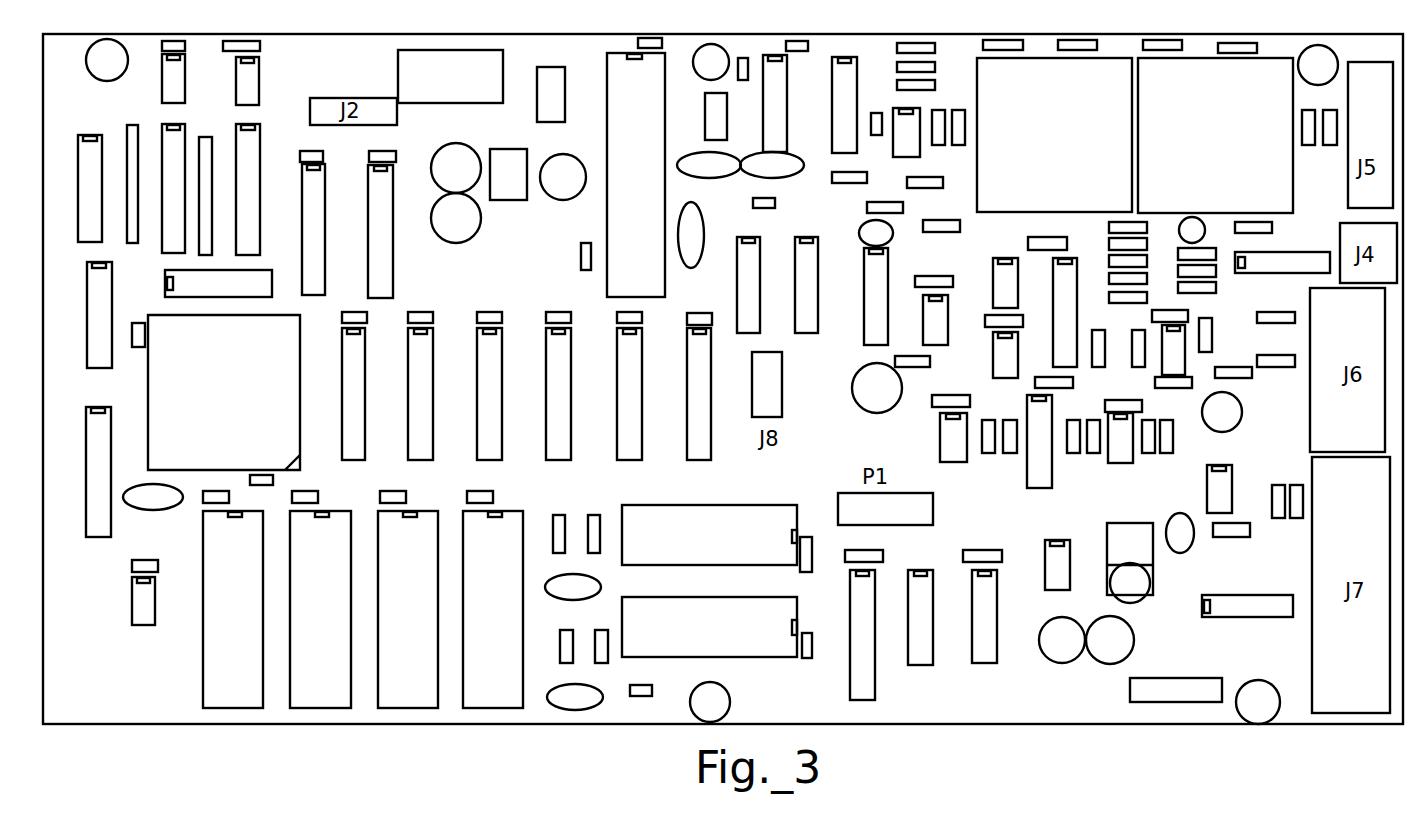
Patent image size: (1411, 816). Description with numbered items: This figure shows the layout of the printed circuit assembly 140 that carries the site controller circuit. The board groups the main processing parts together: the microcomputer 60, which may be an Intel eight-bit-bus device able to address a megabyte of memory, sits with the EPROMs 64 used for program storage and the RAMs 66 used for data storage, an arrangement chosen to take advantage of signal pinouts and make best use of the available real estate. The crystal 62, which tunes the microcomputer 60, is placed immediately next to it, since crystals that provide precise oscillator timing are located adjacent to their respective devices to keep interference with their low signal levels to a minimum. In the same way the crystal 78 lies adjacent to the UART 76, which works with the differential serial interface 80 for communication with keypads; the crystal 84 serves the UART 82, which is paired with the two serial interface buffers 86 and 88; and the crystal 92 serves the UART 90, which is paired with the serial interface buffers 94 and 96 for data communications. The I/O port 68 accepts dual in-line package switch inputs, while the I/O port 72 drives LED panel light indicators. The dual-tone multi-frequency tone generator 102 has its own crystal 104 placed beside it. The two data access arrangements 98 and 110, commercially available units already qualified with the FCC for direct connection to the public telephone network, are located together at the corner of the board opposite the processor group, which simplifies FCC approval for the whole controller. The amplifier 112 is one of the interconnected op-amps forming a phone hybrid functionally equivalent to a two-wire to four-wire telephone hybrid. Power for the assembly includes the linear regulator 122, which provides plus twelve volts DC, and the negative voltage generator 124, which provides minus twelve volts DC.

The microcomputer 60 is at (246, 411).
The crystal 62 is at (155, 484).
The erasable-programmable read-only memory 64 is at (251, 624).
The random access memory 66 is at (424, 627).
The I/O port 68 is at (326, 223).
The I/O port 72 is at (112, 432).
The universal asynchronous receiver-transmitter 76 is at (725, 549).
The crystal 78 is at (600, 581).
The RS-485 interface 80 is at (1223, 465).
The UART 82 is at (725, 641).
The crystal 84 is at (602, 691).
The RS-232 interface buffer 86 is at (1285, 595).
The RS-232 interface buffer 88 is at (1203, 678).
The UART 90 is at (650, 184).
The crystal 92 is at (693, 179).
The RS-232 interface buffer 94 is at (761, 295).
The RS-232 interface buffer 96 is at (819, 297).
The data access arrangement 98 is at (1228, 150).
The dual-tone multi-frequency tone generator 102 is at (786, 103).
The crystal 104 is at (800, 157).
The data access arrangement 110 is at (1078, 155).
The amplifier 112 is at (1122, 464).
The linear regulator 122 is at (1155, 523).
The negative voltage generator 124 is at (1073, 540).
The printed circuit assembly 140 is at (265, 727).